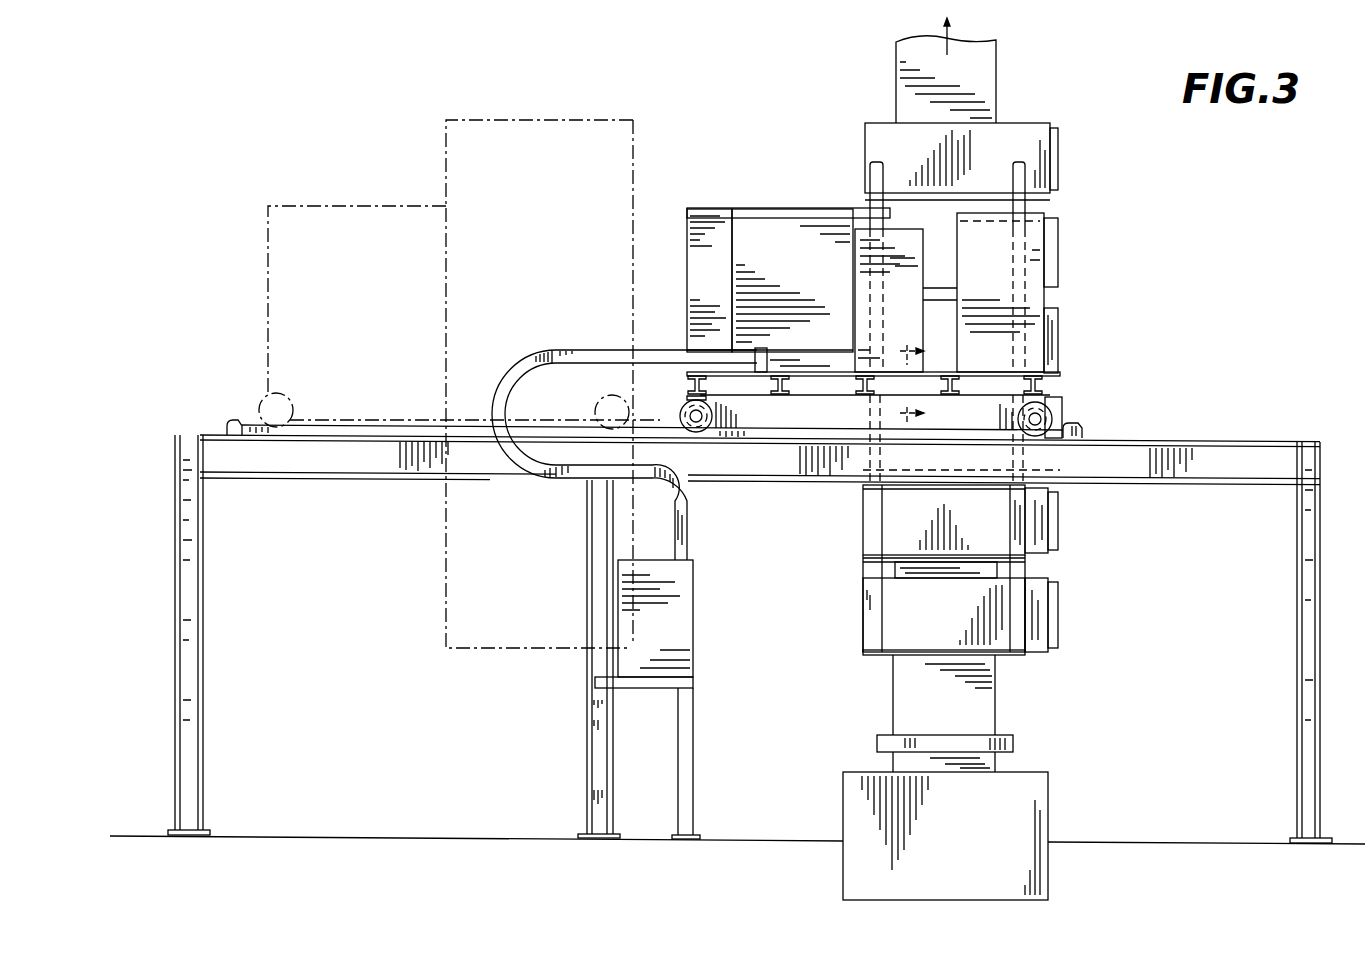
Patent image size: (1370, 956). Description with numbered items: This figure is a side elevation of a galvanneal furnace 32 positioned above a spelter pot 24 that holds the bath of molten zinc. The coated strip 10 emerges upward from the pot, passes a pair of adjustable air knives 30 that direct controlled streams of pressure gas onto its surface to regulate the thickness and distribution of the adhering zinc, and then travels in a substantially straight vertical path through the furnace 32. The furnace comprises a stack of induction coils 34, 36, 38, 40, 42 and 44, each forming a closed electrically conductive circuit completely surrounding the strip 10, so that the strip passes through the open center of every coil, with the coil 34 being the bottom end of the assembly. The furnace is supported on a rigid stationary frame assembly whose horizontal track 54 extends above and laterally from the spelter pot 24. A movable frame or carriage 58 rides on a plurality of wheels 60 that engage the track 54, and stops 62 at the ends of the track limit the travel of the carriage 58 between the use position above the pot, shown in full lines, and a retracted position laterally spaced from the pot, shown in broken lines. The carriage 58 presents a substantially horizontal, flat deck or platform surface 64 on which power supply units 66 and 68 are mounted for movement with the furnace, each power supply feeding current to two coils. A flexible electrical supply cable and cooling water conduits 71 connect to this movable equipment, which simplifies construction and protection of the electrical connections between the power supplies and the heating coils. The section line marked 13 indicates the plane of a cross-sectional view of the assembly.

The strip 10 is at (983, 62).
The section line 13 is at (925, 377).
The spelter pot 24 is at (1032, 807).
The air knives 30 is at (1015, 743).
The galvanneal furnace 32 is at (853, 205).
The induction coil 34 is at (1060, 614).
The induction coil 36 is at (1060, 519).
The induction coil 38 is at (1060, 397).
The induction coil 40 is at (1060, 318).
The induction coil 42 is at (1060, 222).
The induction coil 44 is at (1060, 122).
The horizontal track 54 is at (403, 420).
The carriage 58 is at (690, 388).
The wheels 60 is at (678, 414).
The stops 62 is at (228, 428).
The platform surface 64 is at (727, 380).
The power supply unit 66 is at (776, 218).
The power supply unit 68 is at (710, 222).
The flexible electrical supply cable and cooling water conduits 71 is at (540, 352).